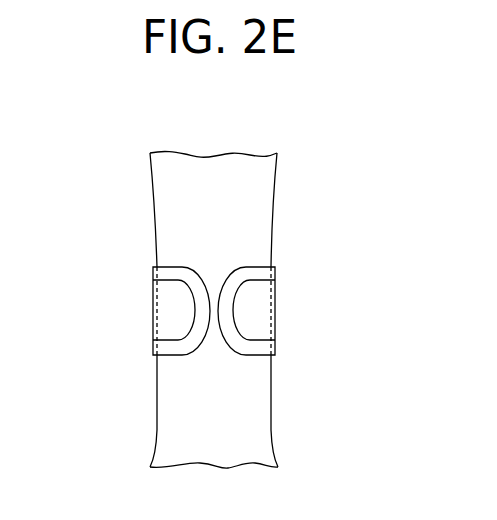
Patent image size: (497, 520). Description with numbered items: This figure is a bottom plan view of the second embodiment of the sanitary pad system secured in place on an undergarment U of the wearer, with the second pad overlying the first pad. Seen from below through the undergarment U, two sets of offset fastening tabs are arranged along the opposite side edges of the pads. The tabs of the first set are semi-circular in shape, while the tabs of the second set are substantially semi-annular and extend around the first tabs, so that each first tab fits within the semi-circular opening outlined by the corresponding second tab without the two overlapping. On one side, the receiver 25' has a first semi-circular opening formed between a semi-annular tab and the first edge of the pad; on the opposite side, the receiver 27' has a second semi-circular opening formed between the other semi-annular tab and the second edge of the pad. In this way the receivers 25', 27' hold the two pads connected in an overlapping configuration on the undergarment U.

The undergarment U is at (263, 182).
The receiver 27' is at (153, 341).
The receiver 25' is at (282, 282).